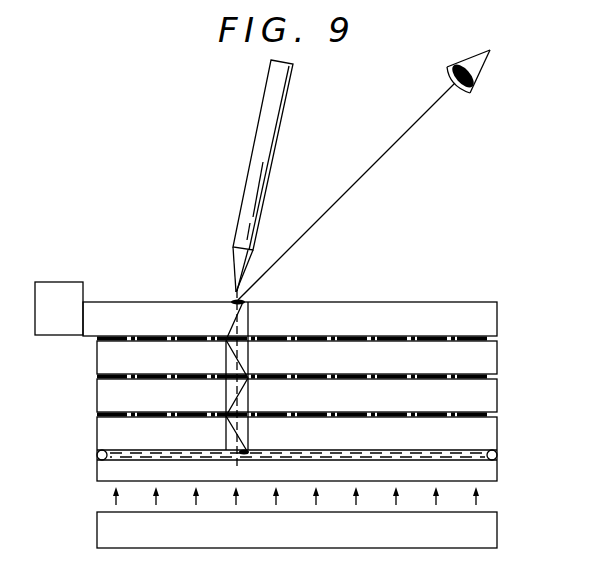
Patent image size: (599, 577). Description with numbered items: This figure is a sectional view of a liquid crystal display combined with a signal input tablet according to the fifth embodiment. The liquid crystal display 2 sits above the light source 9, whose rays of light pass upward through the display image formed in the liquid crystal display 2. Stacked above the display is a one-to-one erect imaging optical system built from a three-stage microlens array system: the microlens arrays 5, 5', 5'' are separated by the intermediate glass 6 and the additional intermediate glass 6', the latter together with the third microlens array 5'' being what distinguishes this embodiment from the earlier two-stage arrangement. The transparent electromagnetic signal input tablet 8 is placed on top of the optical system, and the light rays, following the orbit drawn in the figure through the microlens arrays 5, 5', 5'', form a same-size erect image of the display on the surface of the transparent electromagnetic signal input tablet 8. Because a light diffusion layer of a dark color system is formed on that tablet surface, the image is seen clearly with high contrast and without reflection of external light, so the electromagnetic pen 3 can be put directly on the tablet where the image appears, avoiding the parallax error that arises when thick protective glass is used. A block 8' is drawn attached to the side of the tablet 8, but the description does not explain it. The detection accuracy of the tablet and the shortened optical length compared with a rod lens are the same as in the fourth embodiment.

The liquid crystal display 2 is at (507, 418).
The electromagnetic pen 3 is at (253, 143).
The microlens array 5 is at (277, 354).
The microlens array 5' is at (277, 392).
The microlens array 5'' is at (277, 430).
The intermediate glass 6 is at (322, 357).
The intermediate glass 6' is at (324, 395).
The transparent electromagnetic signal input tablet 8 is at (315, 319).
The light detector 8' is at (59, 284).
The light source 9 is at (499, 531).